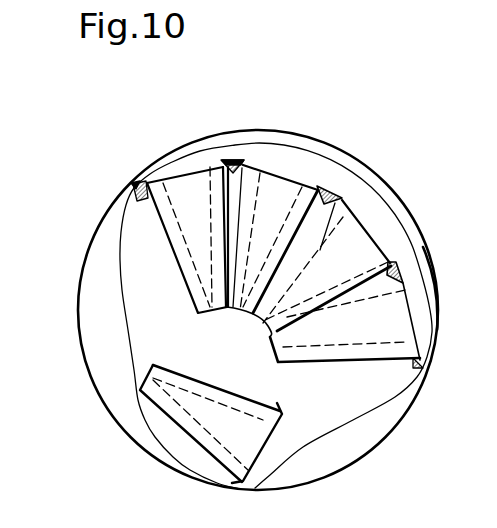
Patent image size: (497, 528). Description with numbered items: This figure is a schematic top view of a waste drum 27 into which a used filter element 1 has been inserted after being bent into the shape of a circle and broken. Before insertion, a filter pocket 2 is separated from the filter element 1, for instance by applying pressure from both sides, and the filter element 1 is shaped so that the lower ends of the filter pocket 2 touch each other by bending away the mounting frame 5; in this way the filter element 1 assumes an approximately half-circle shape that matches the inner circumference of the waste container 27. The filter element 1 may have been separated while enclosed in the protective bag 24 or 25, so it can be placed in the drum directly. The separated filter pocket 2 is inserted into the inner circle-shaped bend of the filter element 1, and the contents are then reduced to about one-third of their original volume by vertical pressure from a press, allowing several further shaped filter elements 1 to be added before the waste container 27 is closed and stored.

The filter element 1 is at (270, 187).
The filter pocket 2 is at (182, 400).
The mounting frame 5 is at (133, 189).
The protective bag 24 is at (337, 162).
The protective bag 25 is at (341, 153).
The waste drum 27 is at (417, 224).